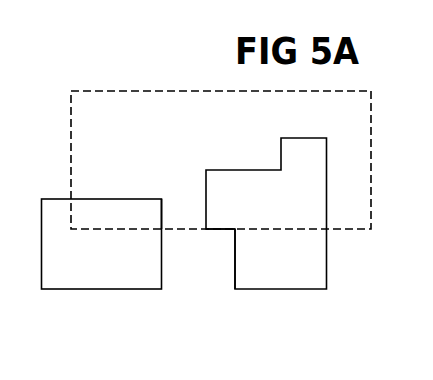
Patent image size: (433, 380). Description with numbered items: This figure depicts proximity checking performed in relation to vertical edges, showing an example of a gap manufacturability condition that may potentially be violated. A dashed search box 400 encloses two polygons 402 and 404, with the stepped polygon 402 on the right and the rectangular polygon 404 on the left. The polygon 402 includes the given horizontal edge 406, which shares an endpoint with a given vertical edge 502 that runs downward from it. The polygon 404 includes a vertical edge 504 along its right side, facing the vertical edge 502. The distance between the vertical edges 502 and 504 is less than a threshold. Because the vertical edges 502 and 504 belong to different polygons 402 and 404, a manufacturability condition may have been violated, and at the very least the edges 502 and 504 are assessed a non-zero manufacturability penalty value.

The search box 400 is at (130, 92).
The polygon 402 is at (319, 275).
The polygon 404 is at (114, 275).
The horizontal edge 406 is at (215, 230).
The vertical edge 502 is at (236, 272).
The vertical edge 504 is at (162, 205).